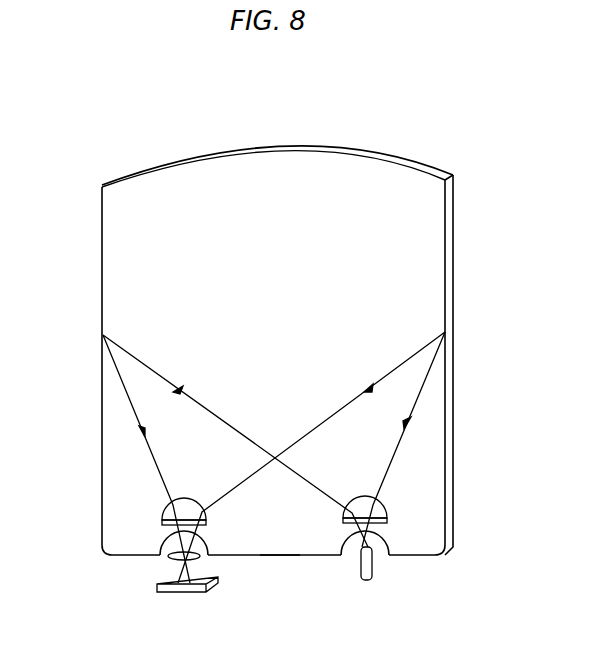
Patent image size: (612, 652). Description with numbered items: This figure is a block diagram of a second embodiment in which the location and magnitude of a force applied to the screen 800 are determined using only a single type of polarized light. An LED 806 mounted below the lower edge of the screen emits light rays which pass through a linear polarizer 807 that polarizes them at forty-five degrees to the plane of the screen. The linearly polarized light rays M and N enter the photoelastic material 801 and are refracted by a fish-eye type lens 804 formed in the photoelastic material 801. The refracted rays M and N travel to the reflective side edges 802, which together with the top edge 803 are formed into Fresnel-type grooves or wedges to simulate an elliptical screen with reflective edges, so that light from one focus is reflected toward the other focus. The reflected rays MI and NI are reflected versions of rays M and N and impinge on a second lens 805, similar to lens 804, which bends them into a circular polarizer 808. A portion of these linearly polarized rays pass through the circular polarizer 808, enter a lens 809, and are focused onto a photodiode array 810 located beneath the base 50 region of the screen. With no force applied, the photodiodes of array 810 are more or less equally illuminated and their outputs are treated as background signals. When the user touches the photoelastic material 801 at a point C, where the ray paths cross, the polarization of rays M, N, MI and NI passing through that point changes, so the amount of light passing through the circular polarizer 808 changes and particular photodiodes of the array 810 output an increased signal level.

The screen 800 is at (341, 97).
The photoelastic material 801 is at (392, 168).
The side edges 802 is at (102, 247).
The top edge 803 is at (262, 152).
The lens 804 is at (388, 513).
The lens 805 is at (165, 518).
The LED 806 is at (373, 570).
The linear polarizer 807 is at (391, 535).
The circular polarizer 808 is at (207, 538).
The lens 809 is at (165, 559).
The photodiode array 810 is at (176, 593).
The base plate 50 is at (275, 558).
The light ray N is at (213, 412).
The reflected light ray NI is at (153, 454).
The light ray M is at (410, 418).
The reflected light ray MI is at (353, 398).
The point C is at (275, 456).